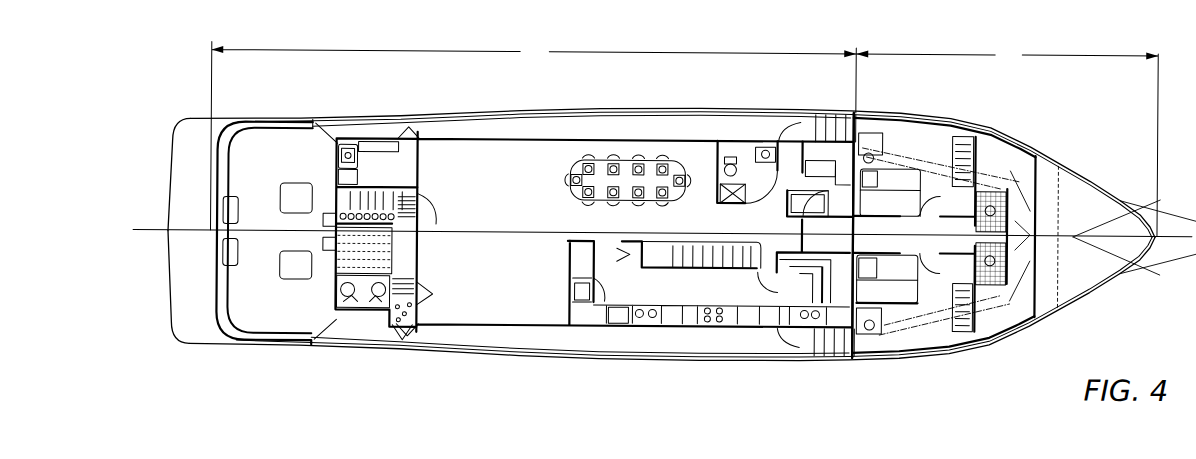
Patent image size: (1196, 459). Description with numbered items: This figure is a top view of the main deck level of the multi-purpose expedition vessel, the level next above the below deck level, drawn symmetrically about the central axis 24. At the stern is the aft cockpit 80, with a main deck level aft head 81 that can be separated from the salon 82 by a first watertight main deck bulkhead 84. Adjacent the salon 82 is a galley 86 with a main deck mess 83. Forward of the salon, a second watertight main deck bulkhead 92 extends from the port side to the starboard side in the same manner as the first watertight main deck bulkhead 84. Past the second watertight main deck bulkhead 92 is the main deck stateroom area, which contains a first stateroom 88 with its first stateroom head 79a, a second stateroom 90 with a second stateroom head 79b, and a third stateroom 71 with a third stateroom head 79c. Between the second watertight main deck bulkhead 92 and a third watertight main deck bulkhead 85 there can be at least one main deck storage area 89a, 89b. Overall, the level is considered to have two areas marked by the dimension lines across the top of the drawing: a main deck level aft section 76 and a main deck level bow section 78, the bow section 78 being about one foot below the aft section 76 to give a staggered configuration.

The central axis 24 is at (152, 230).
The third stateroom 71 is at (802, 176).
The main deck level aft section 76 is at (533, 136).
The main deck level bow section 78 is at (1006, 139).
The first stateroom head 79a is at (730, 164).
The second stateroom head 79b is at (983, 216).
The third stateroom head 79c is at (983, 244).
The aft cockpit 80 is at (282, 146).
The main deck level aft head 81 is at (347, 289).
The salon 82 is at (500, 168).
The main deck mess 83 is at (813, 278).
The first watertight main deck bulkhead 84 is at (417, 161).
The third watertight main deck bulkhead 85 is at (1037, 261).
The galley 86 is at (660, 284).
The first stateroom 88 is at (900, 165).
The main deck storage area 89a is at (963, 147).
The main deck storage area 89b is at (960, 317).
The second stateroom 90 is at (900, 295).
The second watertight main deck bulkhead 92 is at (857, 110).